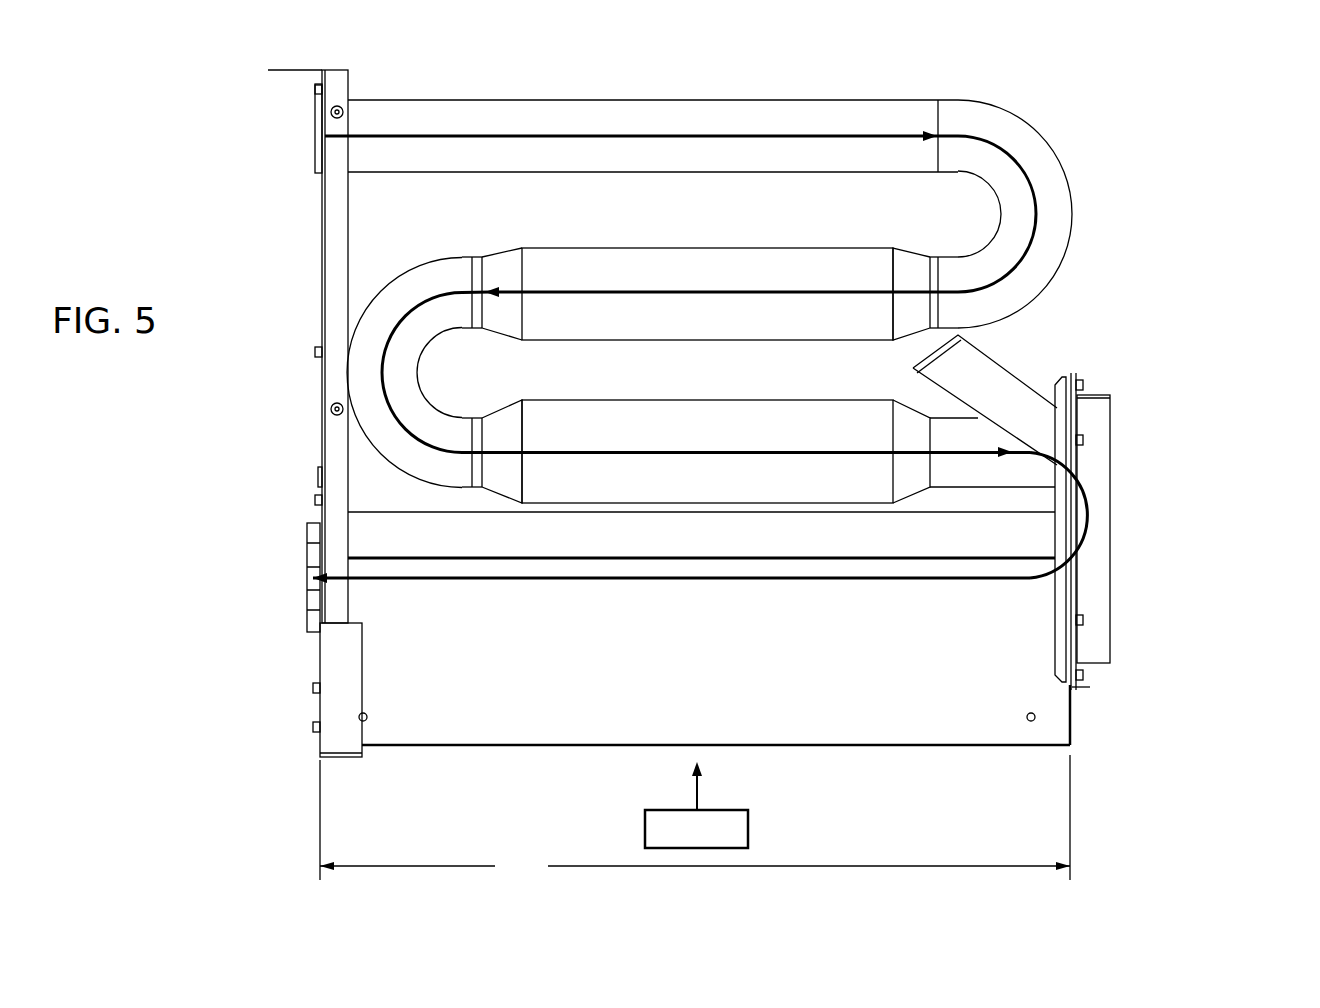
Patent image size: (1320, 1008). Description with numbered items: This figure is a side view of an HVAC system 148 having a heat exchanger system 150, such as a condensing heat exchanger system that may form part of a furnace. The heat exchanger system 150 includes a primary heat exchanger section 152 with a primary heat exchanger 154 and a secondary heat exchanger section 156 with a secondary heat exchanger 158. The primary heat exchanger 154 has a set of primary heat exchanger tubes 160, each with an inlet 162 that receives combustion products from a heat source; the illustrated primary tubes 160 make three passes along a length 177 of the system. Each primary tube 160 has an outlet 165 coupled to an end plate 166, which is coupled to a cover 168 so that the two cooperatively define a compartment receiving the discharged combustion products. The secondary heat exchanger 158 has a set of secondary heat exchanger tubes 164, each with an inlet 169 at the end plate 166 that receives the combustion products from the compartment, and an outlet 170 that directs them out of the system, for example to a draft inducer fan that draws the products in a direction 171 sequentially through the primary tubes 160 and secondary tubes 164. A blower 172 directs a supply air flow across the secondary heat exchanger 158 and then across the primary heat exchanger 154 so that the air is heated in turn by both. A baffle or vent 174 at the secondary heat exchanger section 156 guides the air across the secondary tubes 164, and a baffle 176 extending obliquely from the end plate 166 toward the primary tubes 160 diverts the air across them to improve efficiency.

The HVAC system 148 is at (1190, 93).
The heat exchanger system 150 is at (1052, 102).
The primary heat exchanger section 152 is at (222, 73).
The primary heat exchanger 154 is at (500, 72).
The secondary heat exchanger section 156 is at (1085, 750).
The secondary heat exchanger 158 is at (733, 545).
The primary heat exchanger tubes 160 is at (655, 103).
The inlet 162 is at (298, 147).
The secondary heat exchanger tubes 164 is at (313, 530).
The outlet 165 is at (1040, 452).
The end plate 166 is at (1080, 398).
The cover 168 is at (1093, 473).
The inlet 169 is at (1060, 540).
The outlet 170 is at (300, 578).
The direction 171 is at (830, 135).
The blower 172 is at (750, 826).
The baffle or vent 174 is at (1023, 683).
The baffle 176 is at (980, 365).
The length 177 is at (695, 817).